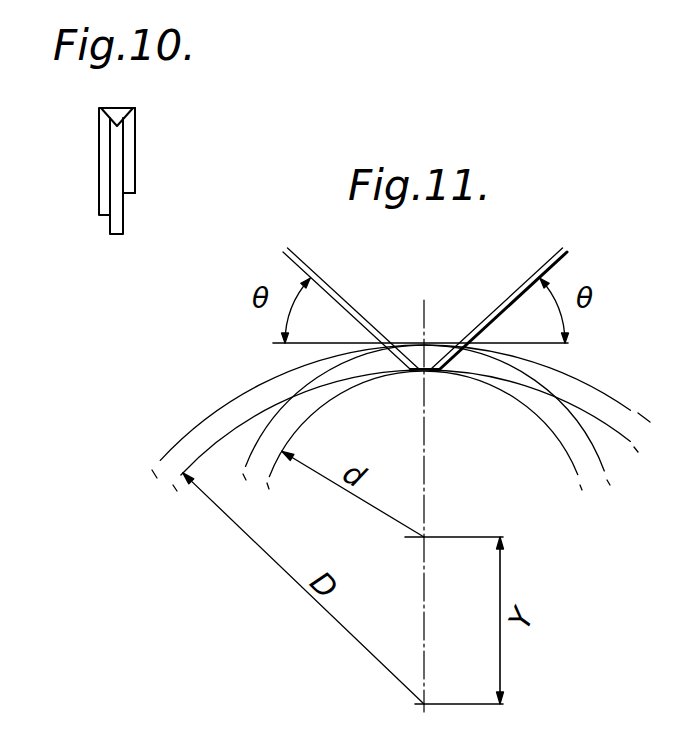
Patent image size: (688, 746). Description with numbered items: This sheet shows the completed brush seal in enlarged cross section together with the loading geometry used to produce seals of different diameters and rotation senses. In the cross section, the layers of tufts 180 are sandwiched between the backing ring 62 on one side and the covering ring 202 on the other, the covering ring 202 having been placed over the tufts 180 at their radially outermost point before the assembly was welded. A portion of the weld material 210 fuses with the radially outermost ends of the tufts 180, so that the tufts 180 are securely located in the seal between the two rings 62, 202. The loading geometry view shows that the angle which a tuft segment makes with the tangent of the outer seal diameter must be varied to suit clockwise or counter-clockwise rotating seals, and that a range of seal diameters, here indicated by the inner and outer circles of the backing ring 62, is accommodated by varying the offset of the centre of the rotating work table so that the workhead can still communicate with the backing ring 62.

In FIG. 10, the backing ring 62 is at (100, 158).
In FIG. 11, the backing ring 62 is at (587, 390).
In FIG. 10, the tufts 180 is at (118, 217).
In FIG. 11, the tufts 180 is at (450, 348).
In FIG. 10, the covering ring 202 is at (128, 158).
In FIG. 10, the weld material 210 is at (123, 107).